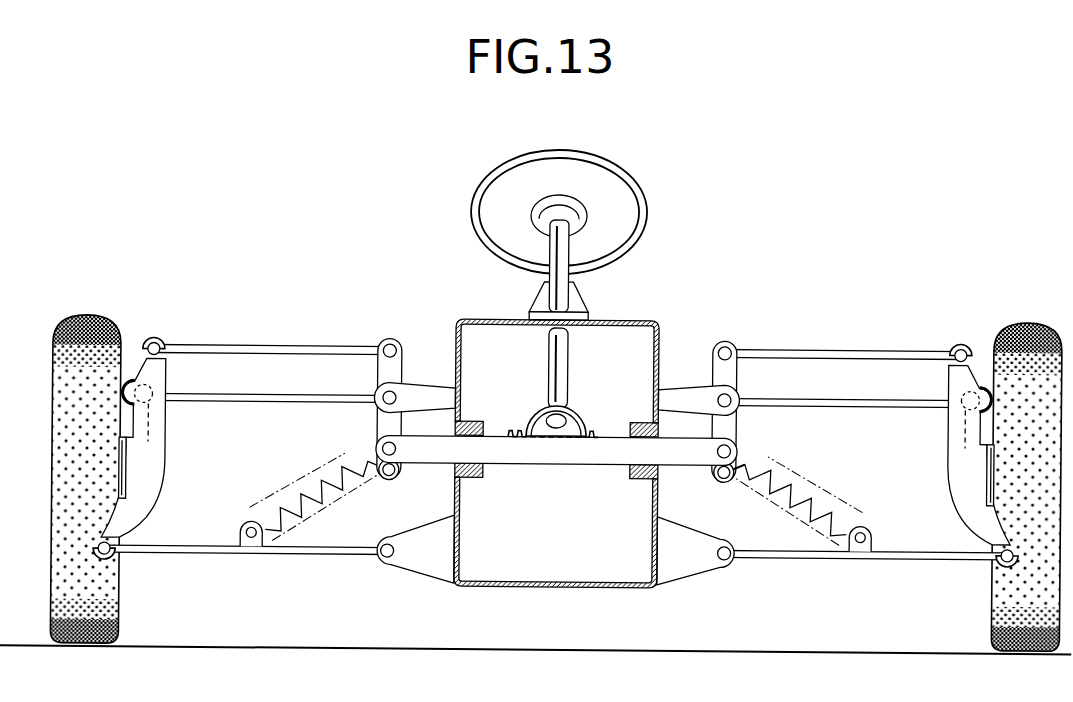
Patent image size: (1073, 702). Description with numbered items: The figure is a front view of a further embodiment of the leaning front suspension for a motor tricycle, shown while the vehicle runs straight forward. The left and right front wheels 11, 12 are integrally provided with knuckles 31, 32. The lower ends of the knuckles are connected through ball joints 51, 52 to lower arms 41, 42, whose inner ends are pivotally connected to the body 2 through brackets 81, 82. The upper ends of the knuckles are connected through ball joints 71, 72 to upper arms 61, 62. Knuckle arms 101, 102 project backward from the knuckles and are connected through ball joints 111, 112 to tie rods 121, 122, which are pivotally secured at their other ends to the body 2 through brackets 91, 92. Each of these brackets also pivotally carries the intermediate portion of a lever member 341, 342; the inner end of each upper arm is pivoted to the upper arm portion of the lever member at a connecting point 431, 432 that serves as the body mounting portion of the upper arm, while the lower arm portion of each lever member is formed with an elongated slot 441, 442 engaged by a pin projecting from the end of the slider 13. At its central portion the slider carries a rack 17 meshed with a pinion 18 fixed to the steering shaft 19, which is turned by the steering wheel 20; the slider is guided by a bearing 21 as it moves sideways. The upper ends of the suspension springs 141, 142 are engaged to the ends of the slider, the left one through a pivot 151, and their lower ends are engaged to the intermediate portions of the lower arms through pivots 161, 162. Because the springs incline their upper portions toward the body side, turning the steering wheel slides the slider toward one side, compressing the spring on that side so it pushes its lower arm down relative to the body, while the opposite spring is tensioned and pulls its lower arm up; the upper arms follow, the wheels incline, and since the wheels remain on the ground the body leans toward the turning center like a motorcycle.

The left front wheel 11 is at (1016, 650).
The right front wheel 12 is at (86, 648).
The body 2 is at (478, 320).
The knuckle 31 is at (946, 456).
The knuckle 32 is at (165, 464).
The lower arm 41 is at (905, 554).
The lower arm 42 is at (243, 556).
The ball joint 51 is at (995, 560).
The ball joint 52 is at (114, 560).
The upper arm 61 is at (850, 347).
The upper arm 62 is at (290, 348).
The ball joint 71 is at (956, 343).
The ball joint 72 is at (161, 344).
The bracket 81 is at (702, 568).
The bracket 82 is at (432, 572).
The bracket 91 is at (688, 392).
The bracket 92 is at (425, 392).
The knuckle arm 101 is at (962, 430).
The knuckle arm 102 is at (150, 431).
The ball joint 111 is at (981, 396).
The ball joint 112 is at (134, 388).
The tie rod 121 is at (892, 398).
The tie rod 122 is at (243, 397).
The slider 13 is at (592, 465).
The suspension spring 141 is at (805, 482).
The suspension spring 142 is at (300, 478).
The pivot 151 is at (712, 467).
The pivot 161 is at (853, 554).
The pivot 162 is at (385, 560).
The rack 17 is at (598, 433).
The pinion 18 is at (528, 418).
The steering shaft 19 is at (568, 346).
The steering wheel 20 is at (606, 172).
The bearing 21 is at (478, 479).
The lever member 341 is at (737, 374).
The lever member 342 is at (377, 374).
The connecting point 431 is at (724, 343).
The connecting point 432 is at (386, 344).
The elongated slot 441 is at (722, 480).
The elongated slot 442 is at (392, 481).